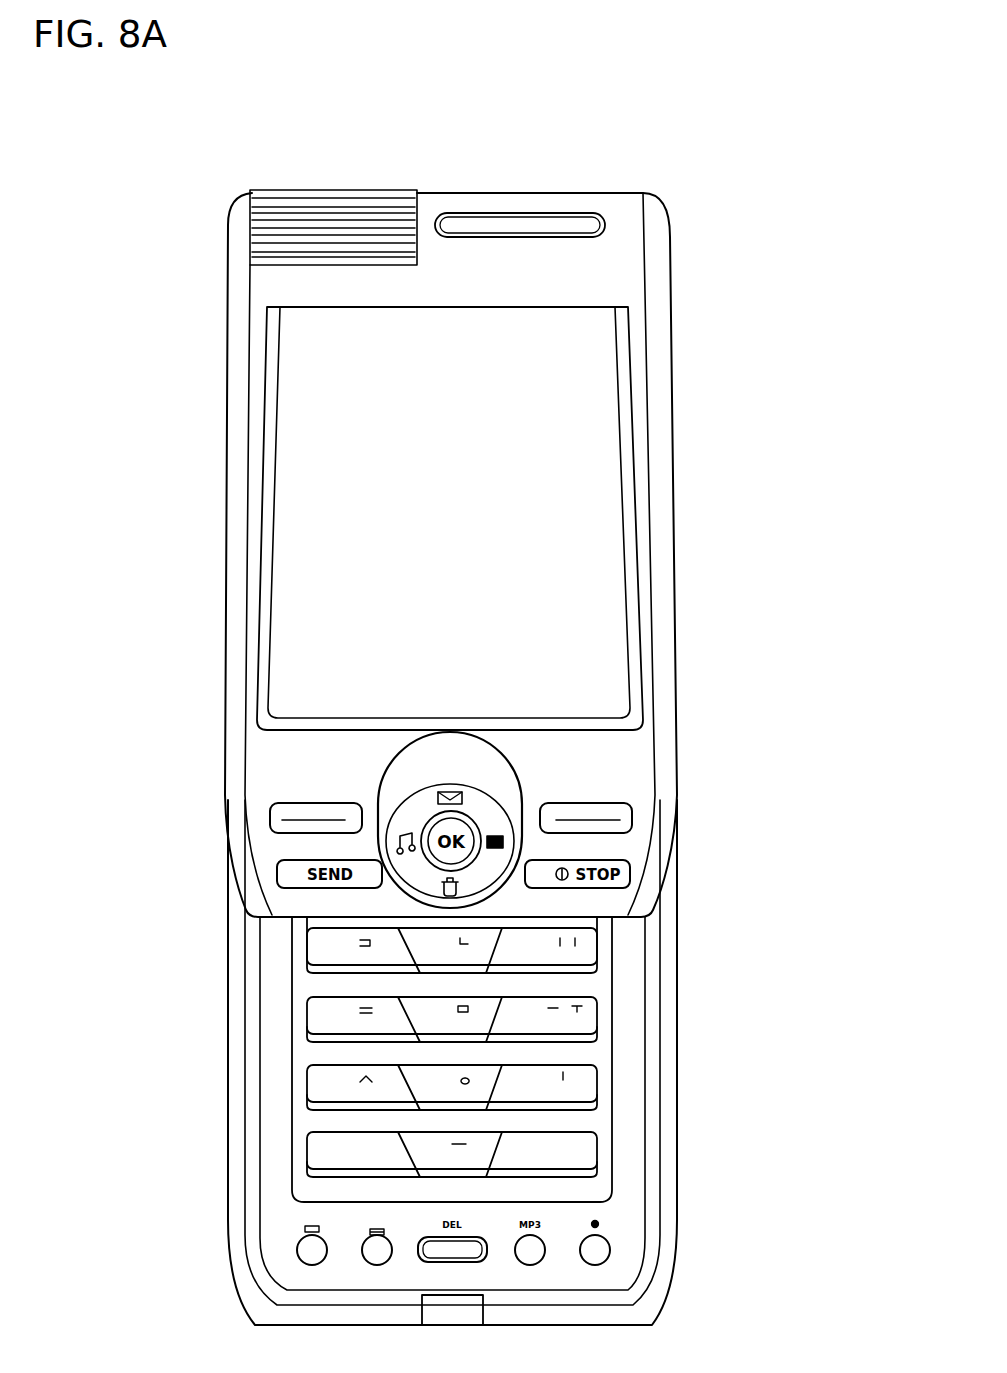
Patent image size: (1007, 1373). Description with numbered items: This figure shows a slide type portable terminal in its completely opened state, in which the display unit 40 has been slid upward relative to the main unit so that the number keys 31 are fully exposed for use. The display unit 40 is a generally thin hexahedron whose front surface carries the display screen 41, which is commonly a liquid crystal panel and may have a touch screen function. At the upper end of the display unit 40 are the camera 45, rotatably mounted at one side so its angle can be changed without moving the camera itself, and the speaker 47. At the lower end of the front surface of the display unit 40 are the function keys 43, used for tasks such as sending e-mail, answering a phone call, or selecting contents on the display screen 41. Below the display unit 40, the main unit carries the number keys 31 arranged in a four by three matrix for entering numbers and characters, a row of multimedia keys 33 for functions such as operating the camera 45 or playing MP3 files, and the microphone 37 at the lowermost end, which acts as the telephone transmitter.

The number keys 31 is at (572, 1018).
The multimedia keys 33 is at (605, 1240).
The microphone 37 is at (467, 1303).
The display unit 40 is at (660, 403).
The display screen 41 is at (350, 560).
The function keys 43 is at (290, 806).
The camera 45 is at (313, 237).
The speaker 47 is at (473, 228).